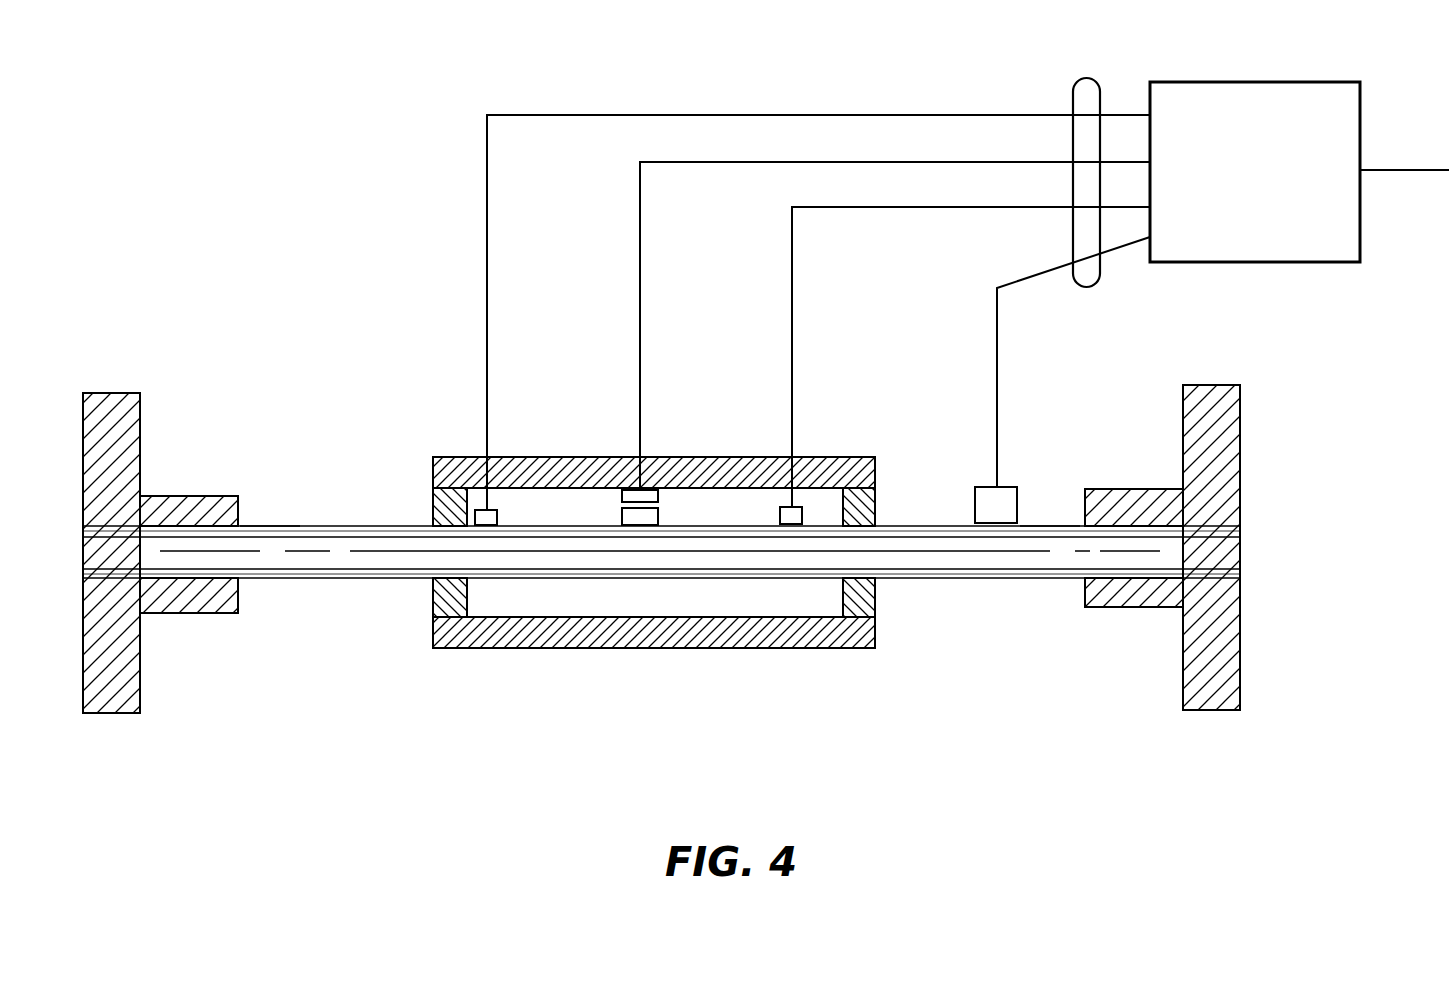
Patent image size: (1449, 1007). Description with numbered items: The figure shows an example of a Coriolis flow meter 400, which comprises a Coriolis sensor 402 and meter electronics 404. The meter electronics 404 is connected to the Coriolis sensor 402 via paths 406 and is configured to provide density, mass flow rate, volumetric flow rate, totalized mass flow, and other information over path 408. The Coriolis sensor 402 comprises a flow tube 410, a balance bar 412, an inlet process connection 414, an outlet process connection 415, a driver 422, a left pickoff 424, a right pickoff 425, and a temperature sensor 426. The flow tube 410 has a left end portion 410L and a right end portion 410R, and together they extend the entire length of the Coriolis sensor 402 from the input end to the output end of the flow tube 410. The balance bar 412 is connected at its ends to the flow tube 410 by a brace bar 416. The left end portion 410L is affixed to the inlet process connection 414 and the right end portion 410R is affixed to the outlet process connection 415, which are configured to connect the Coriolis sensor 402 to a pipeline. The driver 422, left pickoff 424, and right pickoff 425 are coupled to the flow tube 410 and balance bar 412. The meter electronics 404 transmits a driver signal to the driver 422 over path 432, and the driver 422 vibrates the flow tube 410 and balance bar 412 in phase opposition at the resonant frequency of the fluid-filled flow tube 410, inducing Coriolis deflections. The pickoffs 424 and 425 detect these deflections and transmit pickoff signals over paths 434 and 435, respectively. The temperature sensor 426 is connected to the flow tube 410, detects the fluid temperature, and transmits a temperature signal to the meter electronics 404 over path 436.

The Coriolis flow meter 400 is at (186, 216).
The Coriolis sensor 402 is at (316, 302).
The meter electronics 404 is at (1277, 225).
The paths 406 is at (1085, 78).
The path 408 is at (1425, 170).
The flow tube 410 is at (343, 525).
The left end portion 410L is at (258, 525).
The right end portion 410R is at (1042, 525).
The balance bar 412 is at (851, 457).
The inlet process connection 414 is at (140, 412).
The outlet process connection 415 is at (1183, 407).
The brace bar 416 is at (433, 596).
The driver 422 is at (658, 500).
The left pickoff 424 is at (482, 510).
The right pickoff 425 is at (802, 515).
The temperature sensor 426 is at (985, 495).
The path 432 is at (868, 162).
The path 434 is at (972, 115).
The path 435 is at (953, 207).
The path 436 is at (1118, 248).